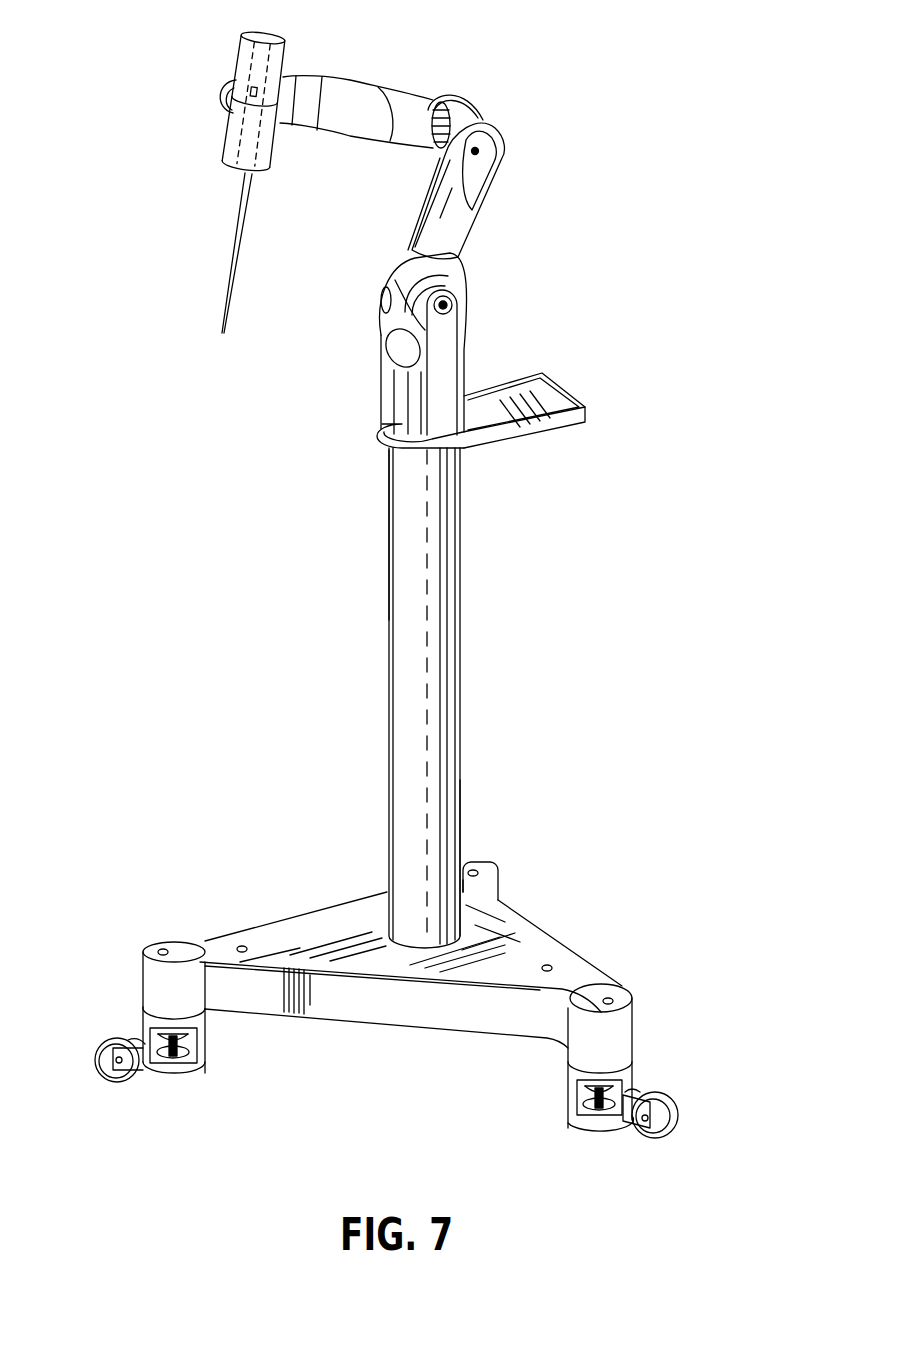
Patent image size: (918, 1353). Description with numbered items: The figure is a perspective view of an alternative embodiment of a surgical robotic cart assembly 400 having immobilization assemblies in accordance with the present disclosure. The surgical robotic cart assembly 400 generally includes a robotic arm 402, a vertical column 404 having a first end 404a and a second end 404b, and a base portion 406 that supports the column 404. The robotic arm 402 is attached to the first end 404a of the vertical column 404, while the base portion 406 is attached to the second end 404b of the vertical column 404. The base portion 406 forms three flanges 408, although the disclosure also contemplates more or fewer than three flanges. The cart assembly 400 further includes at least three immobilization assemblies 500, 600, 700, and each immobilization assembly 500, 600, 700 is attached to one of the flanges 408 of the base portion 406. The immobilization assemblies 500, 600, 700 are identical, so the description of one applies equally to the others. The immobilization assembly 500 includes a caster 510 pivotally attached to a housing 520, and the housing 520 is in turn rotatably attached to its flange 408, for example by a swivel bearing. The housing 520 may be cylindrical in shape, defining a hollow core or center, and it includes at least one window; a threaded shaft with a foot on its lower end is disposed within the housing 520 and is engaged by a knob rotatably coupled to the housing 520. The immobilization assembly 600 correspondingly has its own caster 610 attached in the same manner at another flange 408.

The surgical robotic cart assembly 400 is at (566, 320).
The robotic arm 402 is at (458, 227).
The vertical column 404 is at (447, 670).
The first end 404a is at (440, 502).
The second end 404b is at (433, 908).
The base portion 406 is at (623, 962).
The flanges 408 is at (165, 945).
The immobilization assembly 500 is at (654, 1106).
The caster 510 is at (666, 1092).
The housing 520 is at (578, 1118).
The immobilization assembly 600 is at (124, 1062).
The caster 610 is at (107, 1041).
The immobilization assembly 700 is at (559, 866).